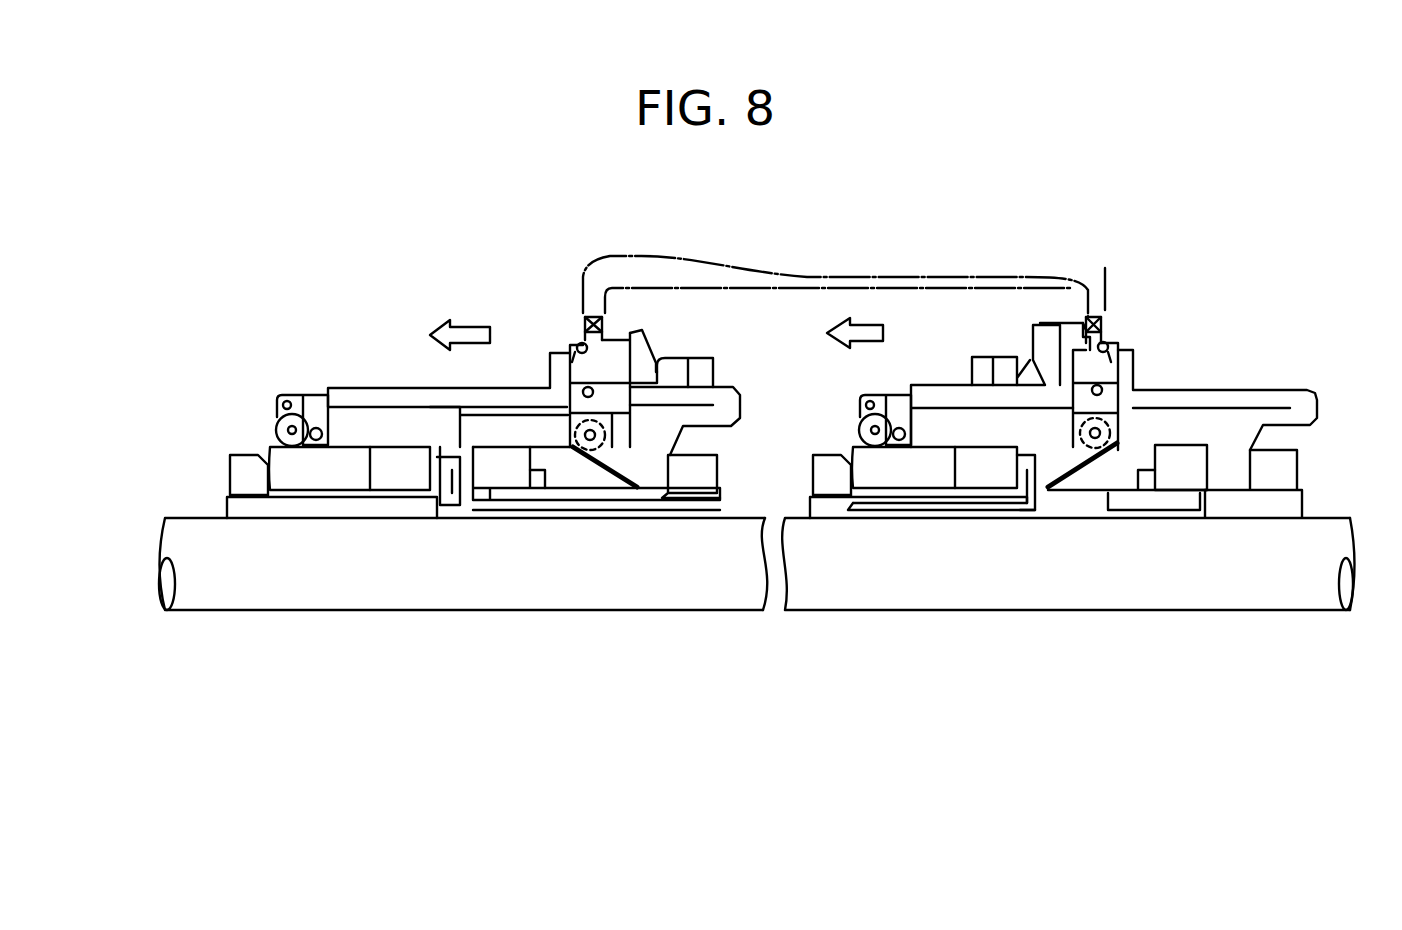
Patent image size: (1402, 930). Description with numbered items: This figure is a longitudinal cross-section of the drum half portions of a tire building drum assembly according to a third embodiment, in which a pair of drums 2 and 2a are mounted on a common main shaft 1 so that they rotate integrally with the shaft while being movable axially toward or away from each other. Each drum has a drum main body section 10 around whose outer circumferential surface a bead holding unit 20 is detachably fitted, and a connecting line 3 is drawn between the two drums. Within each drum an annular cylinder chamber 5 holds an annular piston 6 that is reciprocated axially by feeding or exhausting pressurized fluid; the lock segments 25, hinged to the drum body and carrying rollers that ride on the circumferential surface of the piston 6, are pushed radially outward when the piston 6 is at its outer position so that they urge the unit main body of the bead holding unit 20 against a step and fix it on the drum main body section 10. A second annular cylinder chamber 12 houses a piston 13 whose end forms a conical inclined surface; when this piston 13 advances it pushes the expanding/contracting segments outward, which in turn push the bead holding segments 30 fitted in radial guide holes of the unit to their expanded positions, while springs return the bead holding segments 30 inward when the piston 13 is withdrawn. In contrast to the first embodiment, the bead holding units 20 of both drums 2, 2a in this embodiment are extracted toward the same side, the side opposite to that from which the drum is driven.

The main shaft 1 is at (1222, 612).
The drum 2 is at (1174, 376).
The drum 2a is at (360, 358).
The connecting cable 3 is at (855, 277).
The cylinder chamber 5 is at (408, 481).
The piston 6 is at (335, 480).
The drum main body section 10 is at (665, 437).
The cylinder chamber 12 is at (512, 480).
The piston 13 is at (585, 485).
The bead holding unit 20 is at (407, 387).
The lock segments 25 is at (316, 395).
The bead holding segments 30 is at (573, 345).